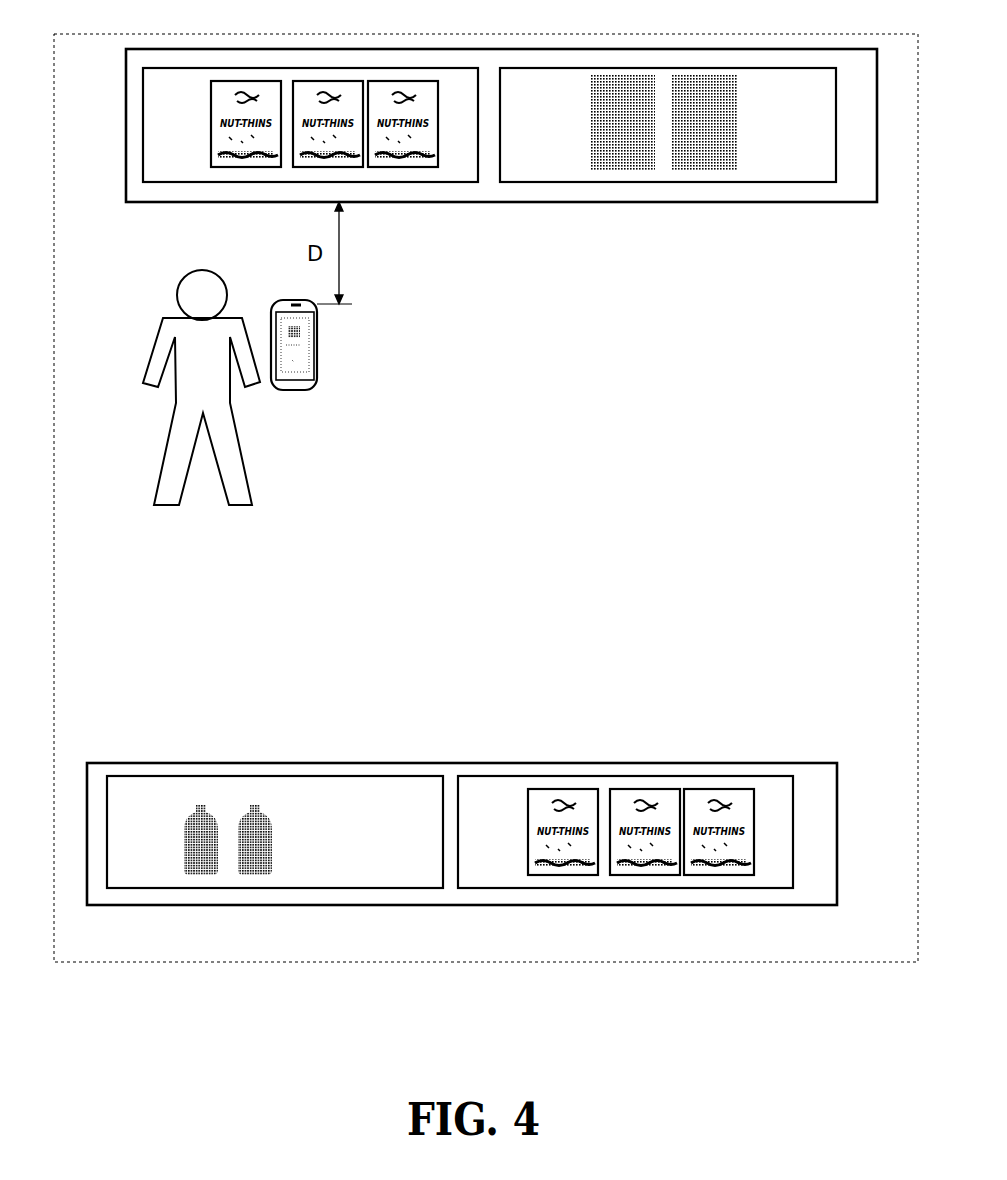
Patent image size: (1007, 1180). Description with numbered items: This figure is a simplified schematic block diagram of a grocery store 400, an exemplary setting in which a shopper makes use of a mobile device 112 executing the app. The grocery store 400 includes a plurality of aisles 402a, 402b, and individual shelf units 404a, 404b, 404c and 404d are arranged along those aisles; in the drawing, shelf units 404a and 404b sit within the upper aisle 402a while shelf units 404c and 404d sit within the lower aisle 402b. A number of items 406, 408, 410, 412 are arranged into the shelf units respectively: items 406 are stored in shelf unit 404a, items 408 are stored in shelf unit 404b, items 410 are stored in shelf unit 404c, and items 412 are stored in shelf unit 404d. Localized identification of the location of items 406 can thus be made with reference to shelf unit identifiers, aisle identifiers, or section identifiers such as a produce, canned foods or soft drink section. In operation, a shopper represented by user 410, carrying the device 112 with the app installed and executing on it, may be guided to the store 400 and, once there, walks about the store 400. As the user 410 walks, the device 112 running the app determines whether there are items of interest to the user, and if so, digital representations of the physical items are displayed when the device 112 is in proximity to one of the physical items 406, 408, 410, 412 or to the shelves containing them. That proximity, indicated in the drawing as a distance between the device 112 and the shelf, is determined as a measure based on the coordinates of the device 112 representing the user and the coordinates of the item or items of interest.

The grocery store 400 is at (95, 64).
The aisle 402a is at (501, 177).
The aisle 402b is at (466, 776).
The shelf unit 404a is at (195, 101).
The shelf unit 404b is at (554, 101).
The shelf unit 404c is at (160, 804).
The shelf unit 404d is at (512, 806).
The items 406 is at (343, 168).
The items 408 is at (627, 173).
The user 410 is at (245, 455).
The items 412 is at (582, 789).
The mobile device 112 is at (317, 365).